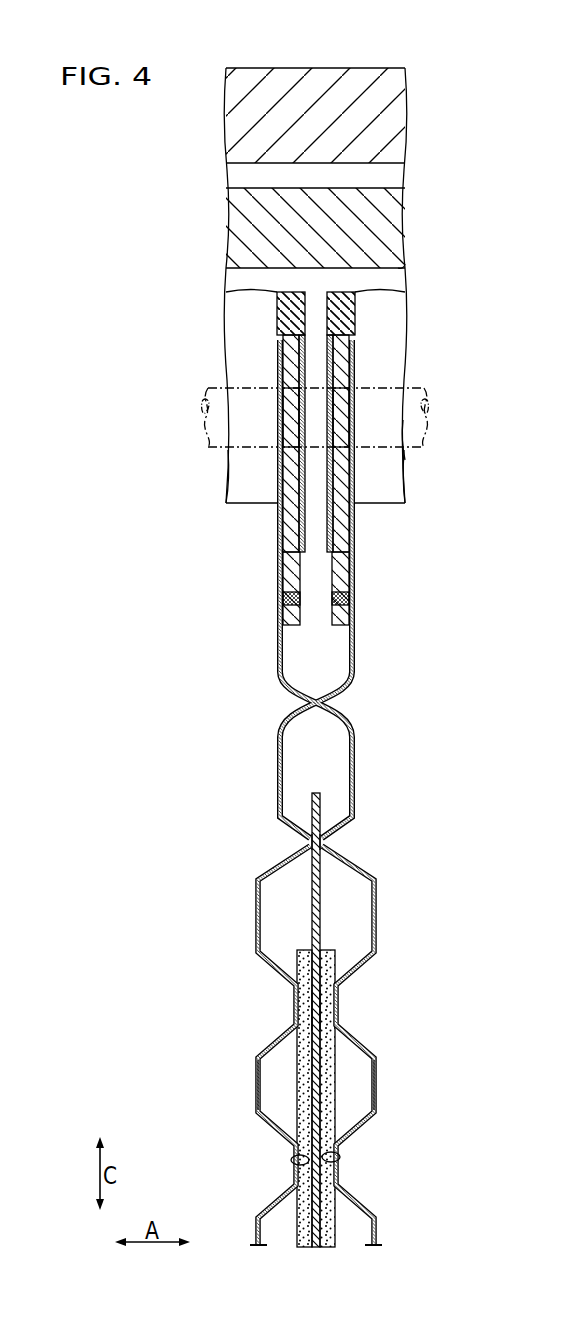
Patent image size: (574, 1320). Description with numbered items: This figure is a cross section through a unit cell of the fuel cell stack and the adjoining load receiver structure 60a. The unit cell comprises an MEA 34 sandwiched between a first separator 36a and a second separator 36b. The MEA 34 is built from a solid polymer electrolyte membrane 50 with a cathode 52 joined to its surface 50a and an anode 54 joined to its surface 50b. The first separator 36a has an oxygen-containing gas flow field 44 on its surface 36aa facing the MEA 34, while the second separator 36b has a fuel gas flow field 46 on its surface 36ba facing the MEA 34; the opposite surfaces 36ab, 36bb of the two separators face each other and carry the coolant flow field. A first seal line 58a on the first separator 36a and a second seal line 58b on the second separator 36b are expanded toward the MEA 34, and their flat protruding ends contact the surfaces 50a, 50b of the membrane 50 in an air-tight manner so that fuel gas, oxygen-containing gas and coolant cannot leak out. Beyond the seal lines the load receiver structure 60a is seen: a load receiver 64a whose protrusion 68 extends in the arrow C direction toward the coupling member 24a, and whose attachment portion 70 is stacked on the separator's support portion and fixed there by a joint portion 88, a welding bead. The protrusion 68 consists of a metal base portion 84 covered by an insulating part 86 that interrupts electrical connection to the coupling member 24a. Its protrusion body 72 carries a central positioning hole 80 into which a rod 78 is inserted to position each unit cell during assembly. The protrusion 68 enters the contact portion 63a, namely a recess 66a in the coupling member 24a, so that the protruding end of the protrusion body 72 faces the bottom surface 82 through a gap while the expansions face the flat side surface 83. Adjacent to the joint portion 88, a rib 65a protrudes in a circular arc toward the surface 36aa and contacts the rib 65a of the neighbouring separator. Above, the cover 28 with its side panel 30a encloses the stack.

The cover 28 is at (414, 88).
The side panel 30a is at (385, 113).
The coupling member 24a is at (390, 220).
The bottom surface 82 is at (405, 270).
The load receiver 64a is at (226, 291).
The protrusion body 72 is at (283, 330).
The rod 78 is at (417, 382).
The positioning hole 80 is at (290, 413).
The load receiver structure 60a is at (496, 383).
The contact portion 63a is at (414, 458).
The side surface 83 is at (250, 481).
The recess 66a is at (387, 481).
The protrusion 68 is at (315, 449).
The insulating part 86 is at (278, 525).
The base portion 84 is at (291, 537).
The attachment portion 70 is at (290, 578).
The joint portion 88 is at (284, 597).
The rib 65a is at (310, 698).
The first seal line 58a is at (322, 846).
The second seal line 58b is at (309, 842).
The MEA 34 is at (294, 1020).
The solid polymer electrolyte membrane 50 is at (314, 905).
The cathode 52 is at (328, 958).
The anode 54 is at (297, 965).
The surface 50a is at (322, 1013).
The surface 50b is at (310, 1003).
The fuel gas flow field 46 is at (278, 1077).
The oxygen-containing gas flow field 44 is at (350, 1077).
The first separator 36a is at (385, 1045).
The second separator 36b is at (248, 1045).
The surface 36aa is at (339, 1160).
The surface 36ab is at (377, 1103).
The surface 36ba is at (292, 1163).
The surface 36bb is at (256, 1103).